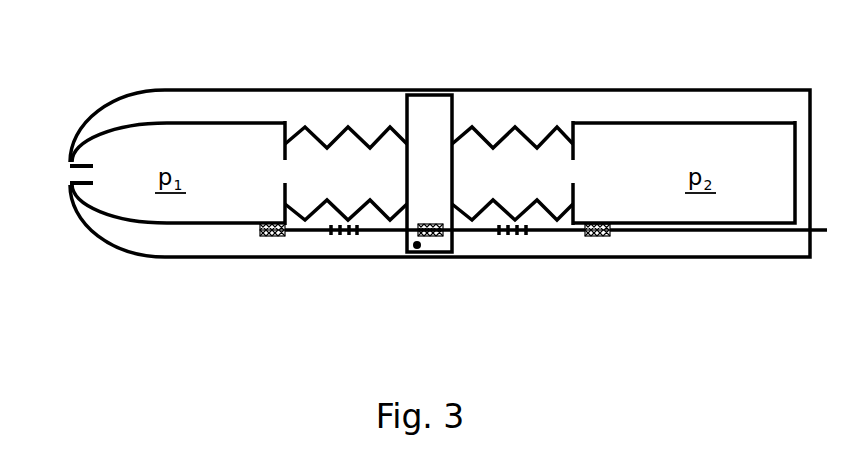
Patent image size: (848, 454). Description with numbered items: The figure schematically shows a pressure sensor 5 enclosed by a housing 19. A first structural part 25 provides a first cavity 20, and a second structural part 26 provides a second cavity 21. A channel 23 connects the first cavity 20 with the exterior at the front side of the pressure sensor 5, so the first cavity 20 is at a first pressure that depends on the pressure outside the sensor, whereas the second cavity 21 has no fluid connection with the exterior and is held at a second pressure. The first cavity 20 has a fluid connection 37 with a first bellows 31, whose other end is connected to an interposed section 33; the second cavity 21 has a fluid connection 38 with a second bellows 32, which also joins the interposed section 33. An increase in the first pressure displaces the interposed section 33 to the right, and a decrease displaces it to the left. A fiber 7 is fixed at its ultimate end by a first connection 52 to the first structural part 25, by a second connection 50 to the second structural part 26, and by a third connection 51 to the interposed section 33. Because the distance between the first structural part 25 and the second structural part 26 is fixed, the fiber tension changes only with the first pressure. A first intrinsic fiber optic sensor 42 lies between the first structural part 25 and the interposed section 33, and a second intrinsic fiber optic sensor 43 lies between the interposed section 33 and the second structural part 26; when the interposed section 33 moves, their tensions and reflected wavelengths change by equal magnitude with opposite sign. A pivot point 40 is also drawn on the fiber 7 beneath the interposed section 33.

The pressure sensor 5 is at (440, 143).
The fiber 7 is at (763, 230).
The housing 19 is at (207, 88).
The first cavity 20 is at (178, 122).
The second cavity 21 is at (755, 123).
The channel 23 is at (84, 180).
The first structural part 25 is at (178, 223).
The second structural part 26 is at (700, 123).
The first bellows 31 is at (361, 132).
The second bellows 32 is at (527, 132).
The interposed section 33 is at (433, 95).
The fluid connection 37 is at (283, 172).
The fluid connection 38 is at (576, 172).
The pivot point 40 is at (416, 248).
The first intrinsic fiber optic sensor 42 is at (348, 235).
The second intrinsic fiber optic sensor 43 is at (518, 235).
The second connection 50 is at (596, 237).
The third connection 51 is at (430, 236).
The first connection 52 is at (273, 237).